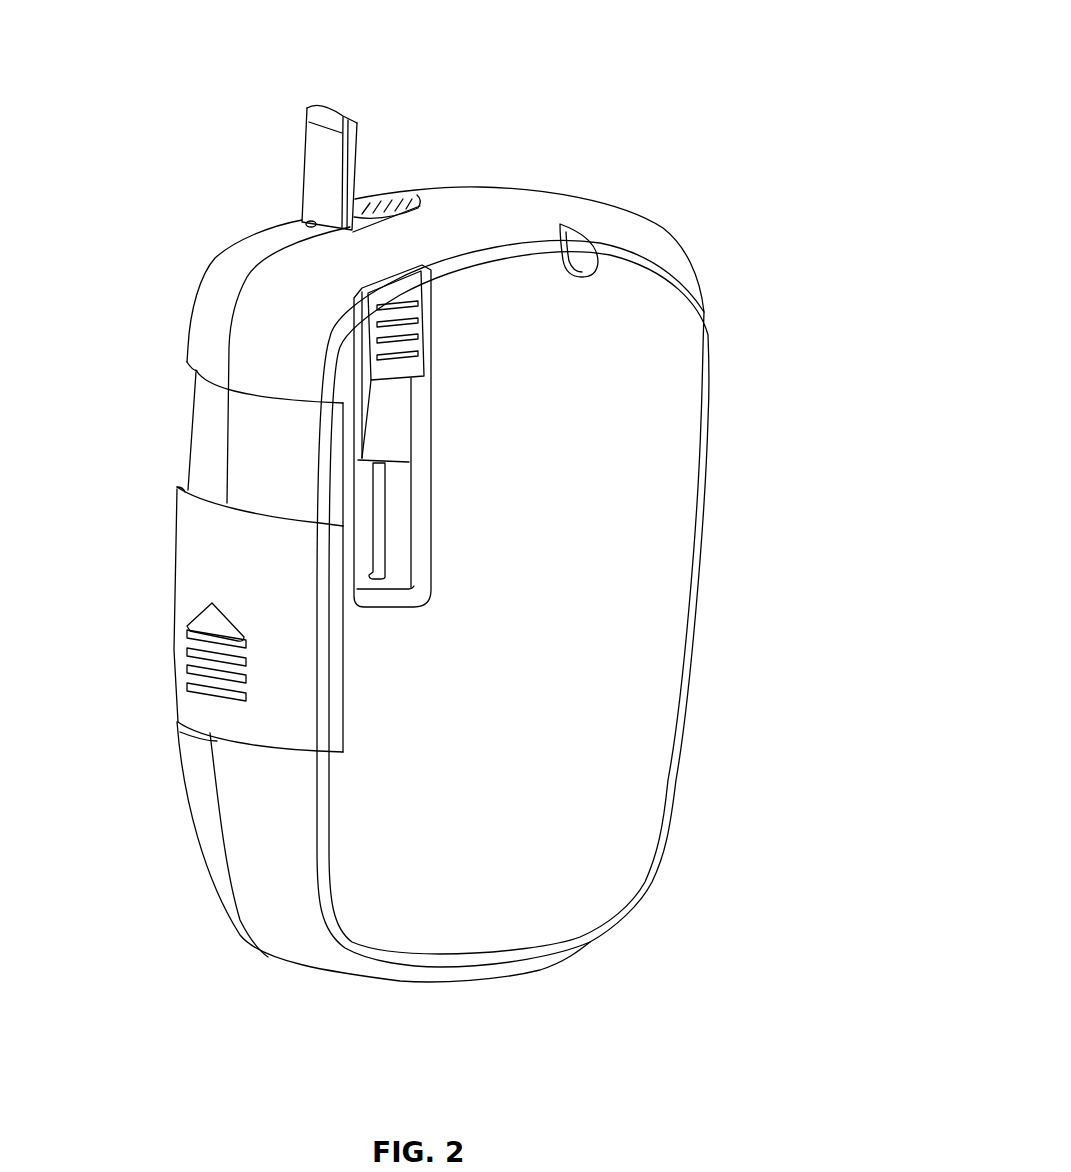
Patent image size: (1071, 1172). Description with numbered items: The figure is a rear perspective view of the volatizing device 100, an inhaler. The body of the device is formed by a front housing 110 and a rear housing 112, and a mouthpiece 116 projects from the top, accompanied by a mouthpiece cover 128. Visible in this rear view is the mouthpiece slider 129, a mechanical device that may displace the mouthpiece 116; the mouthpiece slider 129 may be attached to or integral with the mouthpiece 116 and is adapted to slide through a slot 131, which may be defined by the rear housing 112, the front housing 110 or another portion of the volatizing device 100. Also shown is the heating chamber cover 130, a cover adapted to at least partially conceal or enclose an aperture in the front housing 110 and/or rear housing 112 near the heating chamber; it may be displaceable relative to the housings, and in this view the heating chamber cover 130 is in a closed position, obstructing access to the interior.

The volatizing device 100 is at (673, 157).
The front housing 110 is at (220, 290).
The rear housing 112 is at (667, 322).
The mouthpiece 116 is at (317, 160).
The mouthpiece cover 128 is at (403, 205).
The mouthpiece slider 129 is at (393, 297).
The heating chamber cover 130 is at (227, 580).
The slot 131 is at (376, 507).